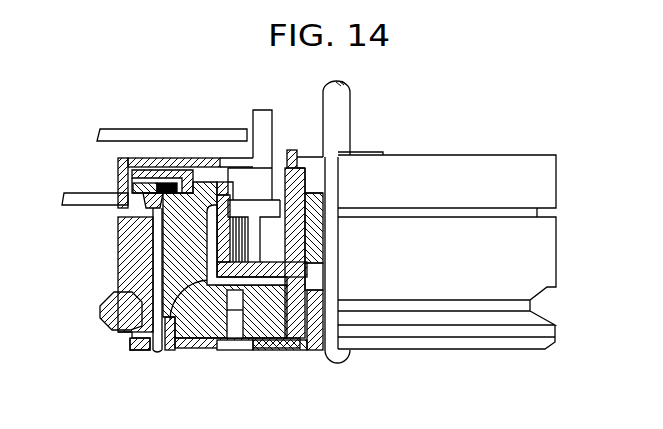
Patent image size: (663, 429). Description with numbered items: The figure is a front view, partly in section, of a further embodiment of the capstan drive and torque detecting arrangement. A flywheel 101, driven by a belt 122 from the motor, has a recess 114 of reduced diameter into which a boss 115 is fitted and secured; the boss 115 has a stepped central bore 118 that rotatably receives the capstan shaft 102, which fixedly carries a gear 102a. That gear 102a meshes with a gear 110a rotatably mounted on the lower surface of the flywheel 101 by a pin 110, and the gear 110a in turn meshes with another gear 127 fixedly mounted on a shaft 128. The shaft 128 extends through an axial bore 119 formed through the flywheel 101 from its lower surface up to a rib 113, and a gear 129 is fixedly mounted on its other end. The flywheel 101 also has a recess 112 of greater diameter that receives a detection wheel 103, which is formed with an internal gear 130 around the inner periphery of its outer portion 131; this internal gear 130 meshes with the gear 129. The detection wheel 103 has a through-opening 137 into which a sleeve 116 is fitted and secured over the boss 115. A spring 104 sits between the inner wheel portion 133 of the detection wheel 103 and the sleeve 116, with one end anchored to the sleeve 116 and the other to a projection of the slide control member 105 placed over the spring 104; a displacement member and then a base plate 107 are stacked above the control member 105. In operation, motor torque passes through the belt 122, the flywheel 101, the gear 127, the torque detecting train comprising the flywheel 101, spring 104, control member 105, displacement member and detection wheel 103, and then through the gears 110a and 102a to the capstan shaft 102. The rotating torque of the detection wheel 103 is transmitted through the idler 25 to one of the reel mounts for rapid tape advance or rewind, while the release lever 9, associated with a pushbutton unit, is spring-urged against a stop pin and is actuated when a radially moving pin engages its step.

The release lever 9 is at (103, 128).
The idler 25 is at (72, 203).
The flywheel 101 is at (565, 246).
The capstan shaft 102 is at (344, 110).
The gear 102a is at (320, 354).
The detection wheel 103 is at (566, 181).
The spring 104 is at (243, 227).
The slide control member 105 is at (272, 207).
The base plate 107 is at (147, 160).
The pin 110 is at (235, 333).
The gear 110a is at (203, 348).
The recess 112 is at (170, 350).
The rib 113 is at (198, 157).
The recess 114 is at (295, 345).
The boss 115 is at (320, 241).
The sleeve 116 is at (300, 172).
The stepped central bore 118 is at (325, 281).
The axial bore 119 is at (153, 260).
The belt 122 is at (100, 316).
The gear 127 is at (136, 346).
The shaft 128 is at (155, 235).
The gear 129 is at (163, 186).
The internal gear 130 is at (133, 186).
The outer portion 131 is at (118, 163).
The inner wheel portion 133 is at (222, 190).
The through-opening 137 is at (303, 267).